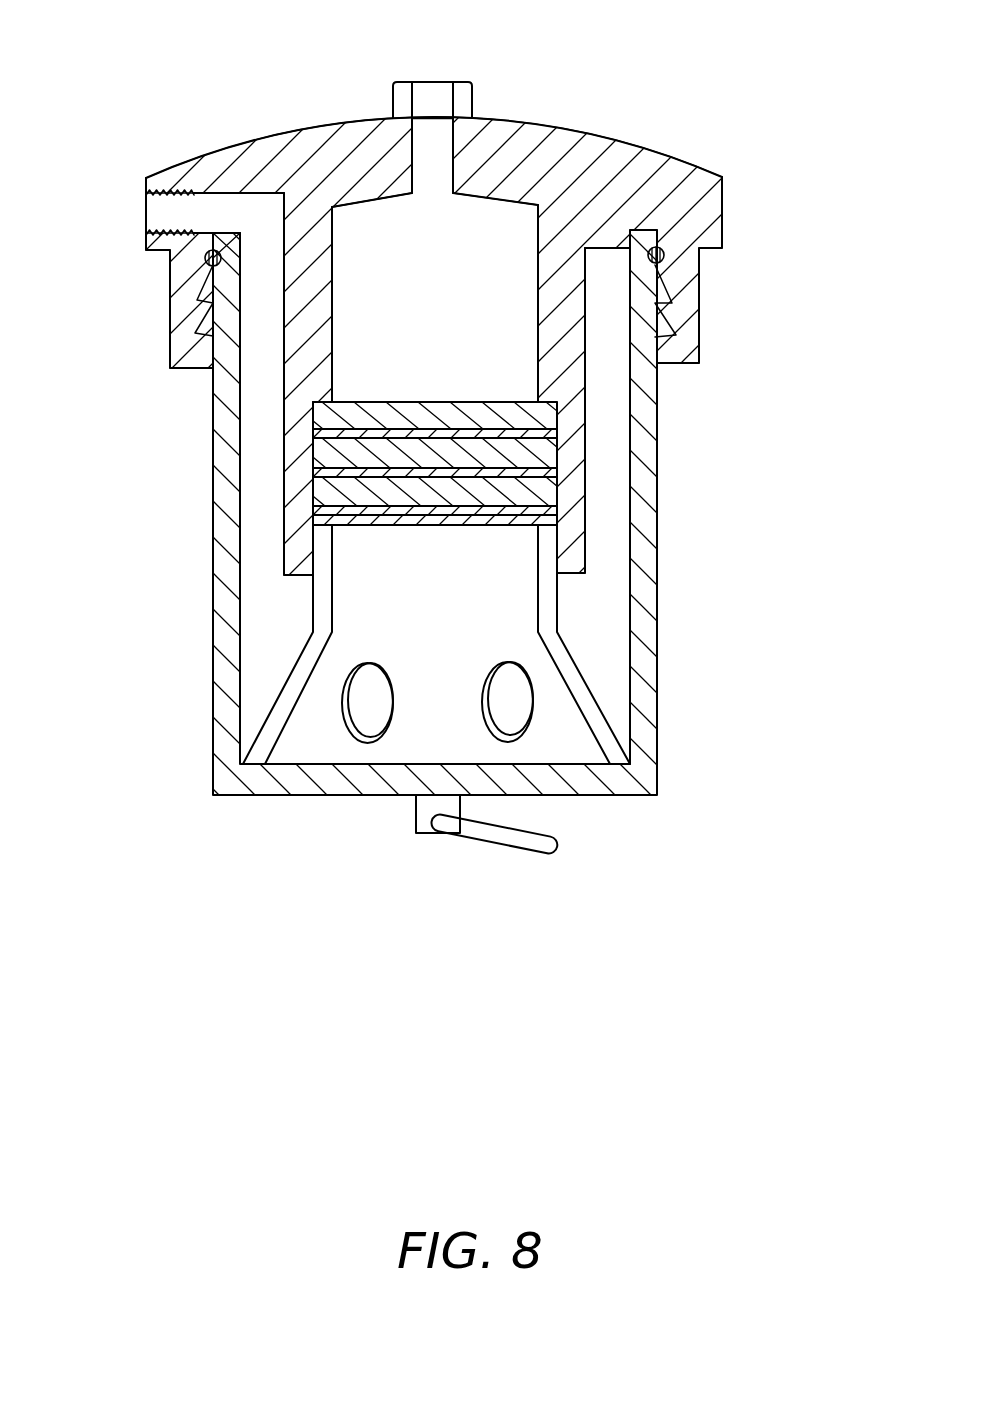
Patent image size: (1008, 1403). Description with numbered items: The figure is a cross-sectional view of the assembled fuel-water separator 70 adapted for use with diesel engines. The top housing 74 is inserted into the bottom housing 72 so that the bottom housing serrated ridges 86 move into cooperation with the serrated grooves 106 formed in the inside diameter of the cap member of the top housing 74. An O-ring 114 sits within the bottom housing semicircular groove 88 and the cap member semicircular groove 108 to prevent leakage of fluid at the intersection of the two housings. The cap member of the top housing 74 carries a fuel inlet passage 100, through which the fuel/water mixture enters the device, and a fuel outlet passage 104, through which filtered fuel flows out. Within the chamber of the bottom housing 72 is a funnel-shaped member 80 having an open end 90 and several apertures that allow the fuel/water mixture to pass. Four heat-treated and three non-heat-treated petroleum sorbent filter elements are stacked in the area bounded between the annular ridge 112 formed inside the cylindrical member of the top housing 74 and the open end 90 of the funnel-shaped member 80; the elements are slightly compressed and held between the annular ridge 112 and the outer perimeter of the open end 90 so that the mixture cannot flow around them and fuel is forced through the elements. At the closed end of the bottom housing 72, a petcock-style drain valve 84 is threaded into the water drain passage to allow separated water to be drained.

The fuel-water separator 70 is at (720, 337).
The bottom housing 72 is at (647, 650).
The top housing 74 is at (643, 157).
The funnel-shaped member 80 is at (414, 739).
The petcock-style drain valve 84 is at (423, 825).
The serrated ridges 86 is at (650, 295).
The semicircular groove 88 is at (214, 258).
The open end 90 is at (320, 528).
The fuel inlet passage 100 is at (163, 212).
The fuel outlet passage 104 is at (436, 140).
The serrated grooves 106 is at (699, 270).
The semicircular groove 108 is at (213, 258).
The annular ridge 112 is at (332, 371).
The O-ring 114 is at (258, 214).